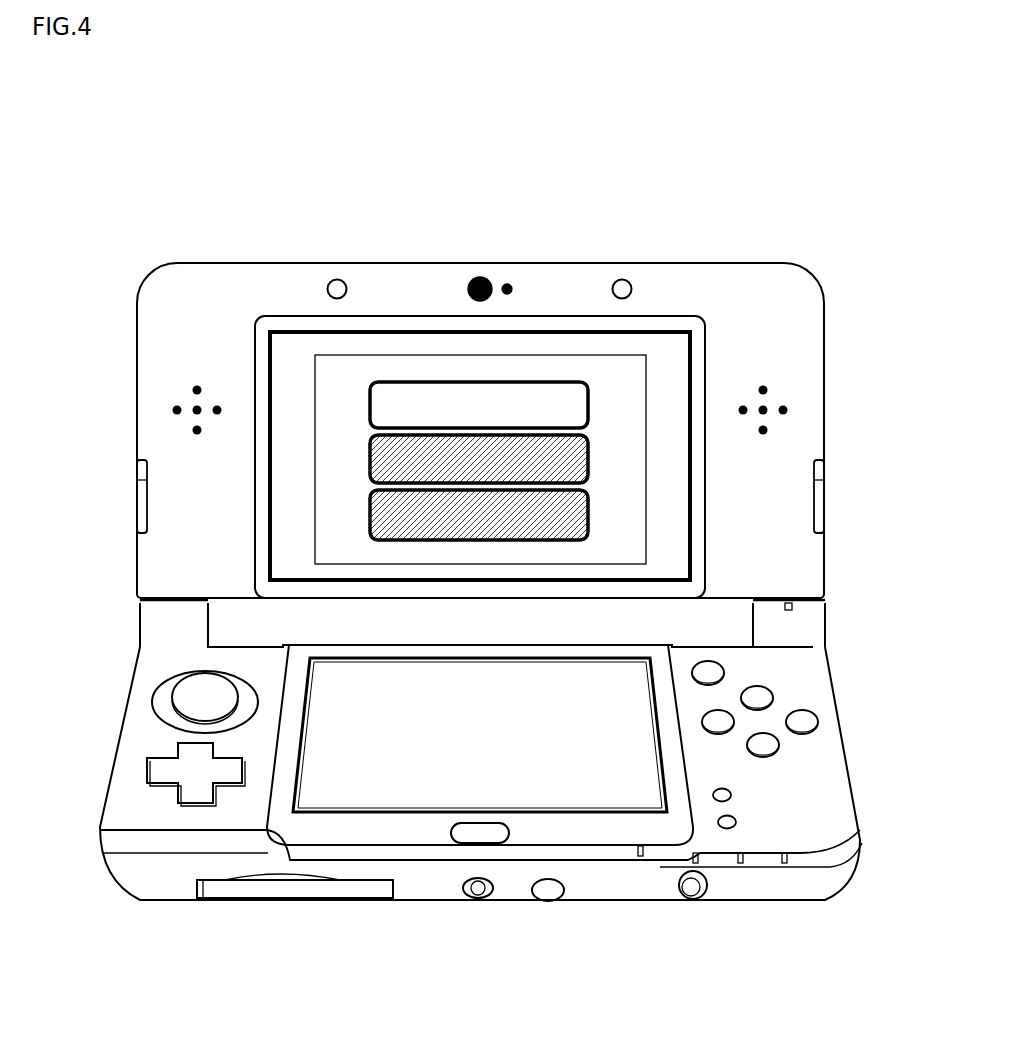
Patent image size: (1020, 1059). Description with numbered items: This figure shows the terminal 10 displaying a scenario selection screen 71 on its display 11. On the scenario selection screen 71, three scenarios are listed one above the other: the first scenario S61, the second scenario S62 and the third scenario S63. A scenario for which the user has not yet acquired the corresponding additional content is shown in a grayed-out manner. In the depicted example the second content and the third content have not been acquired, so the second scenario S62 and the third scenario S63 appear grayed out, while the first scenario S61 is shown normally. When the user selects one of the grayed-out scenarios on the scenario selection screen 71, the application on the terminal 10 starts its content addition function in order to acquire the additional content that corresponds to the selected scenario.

The terminal 10 is at (473, 547).
The display 11 is at (473, 457).
The scenario selection screen 71 is at (473, 469).
The first scenario S61 is at (370, 402).
The second scenario S62 is at (370, 460).
The third scenario S63 is at (370, 517).